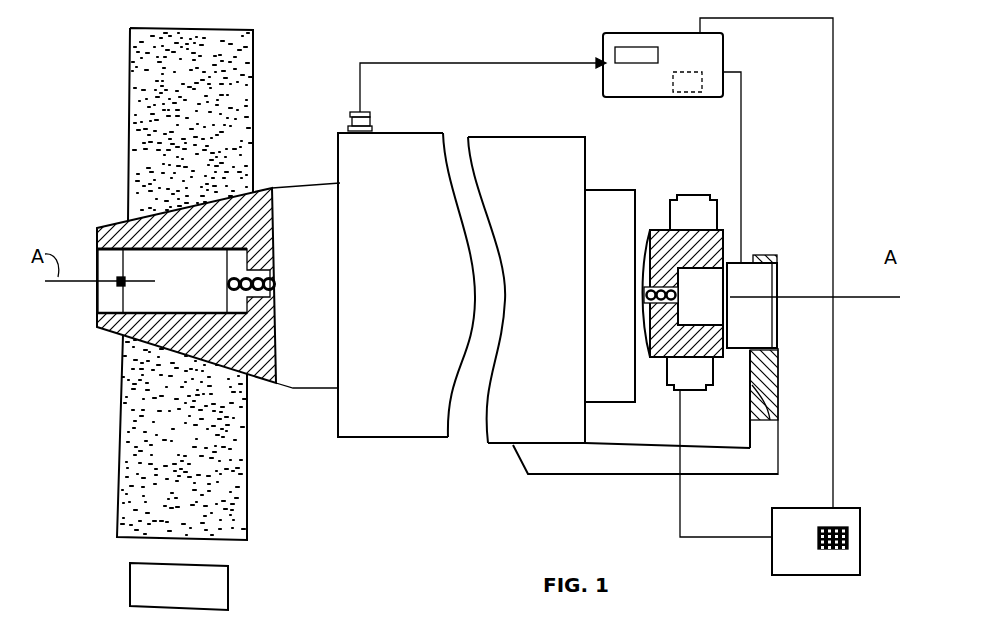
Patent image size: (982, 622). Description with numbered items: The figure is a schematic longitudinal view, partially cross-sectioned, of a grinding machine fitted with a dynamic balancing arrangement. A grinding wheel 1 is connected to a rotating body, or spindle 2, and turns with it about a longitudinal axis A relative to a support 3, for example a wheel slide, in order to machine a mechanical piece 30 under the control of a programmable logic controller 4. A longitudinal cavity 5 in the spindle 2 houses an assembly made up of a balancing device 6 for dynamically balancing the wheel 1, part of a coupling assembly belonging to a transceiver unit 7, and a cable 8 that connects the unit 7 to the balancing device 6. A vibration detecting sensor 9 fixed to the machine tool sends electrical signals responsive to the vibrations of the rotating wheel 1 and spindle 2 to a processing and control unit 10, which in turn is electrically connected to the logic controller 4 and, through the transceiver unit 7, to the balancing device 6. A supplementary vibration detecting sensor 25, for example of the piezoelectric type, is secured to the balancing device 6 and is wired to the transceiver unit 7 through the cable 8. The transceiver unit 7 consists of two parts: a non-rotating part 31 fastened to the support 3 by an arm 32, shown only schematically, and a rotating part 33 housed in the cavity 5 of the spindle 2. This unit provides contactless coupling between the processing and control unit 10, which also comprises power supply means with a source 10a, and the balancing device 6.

The grinding wheel 1 is at (240, 101).
The spindle 2 is at (298, 207).
The support 3 is at (358, 423).
The programmable logic controller 4 is at (792, 553).
The longitudinal cavity 5 is at (97, 305).
The balancing device 6 is at (147, 265).
The transceiver unit 7 is at (749, 224).
The cable 8 is at (279, 295).
The vibration detecting sensor 9 is at (350, 113).
The processing and control unit 10 is at (601, 54).
The source 10a is at (688, 72).
The supplementary vibration detecting sensor 25 is at (116, 288).
The mechanical piece 30 is at (210, 596).
The non-rotating part 31 is at (765, 285).
The arm 32 is at (630, 464).
The rotating part 33 is at (707, 285).